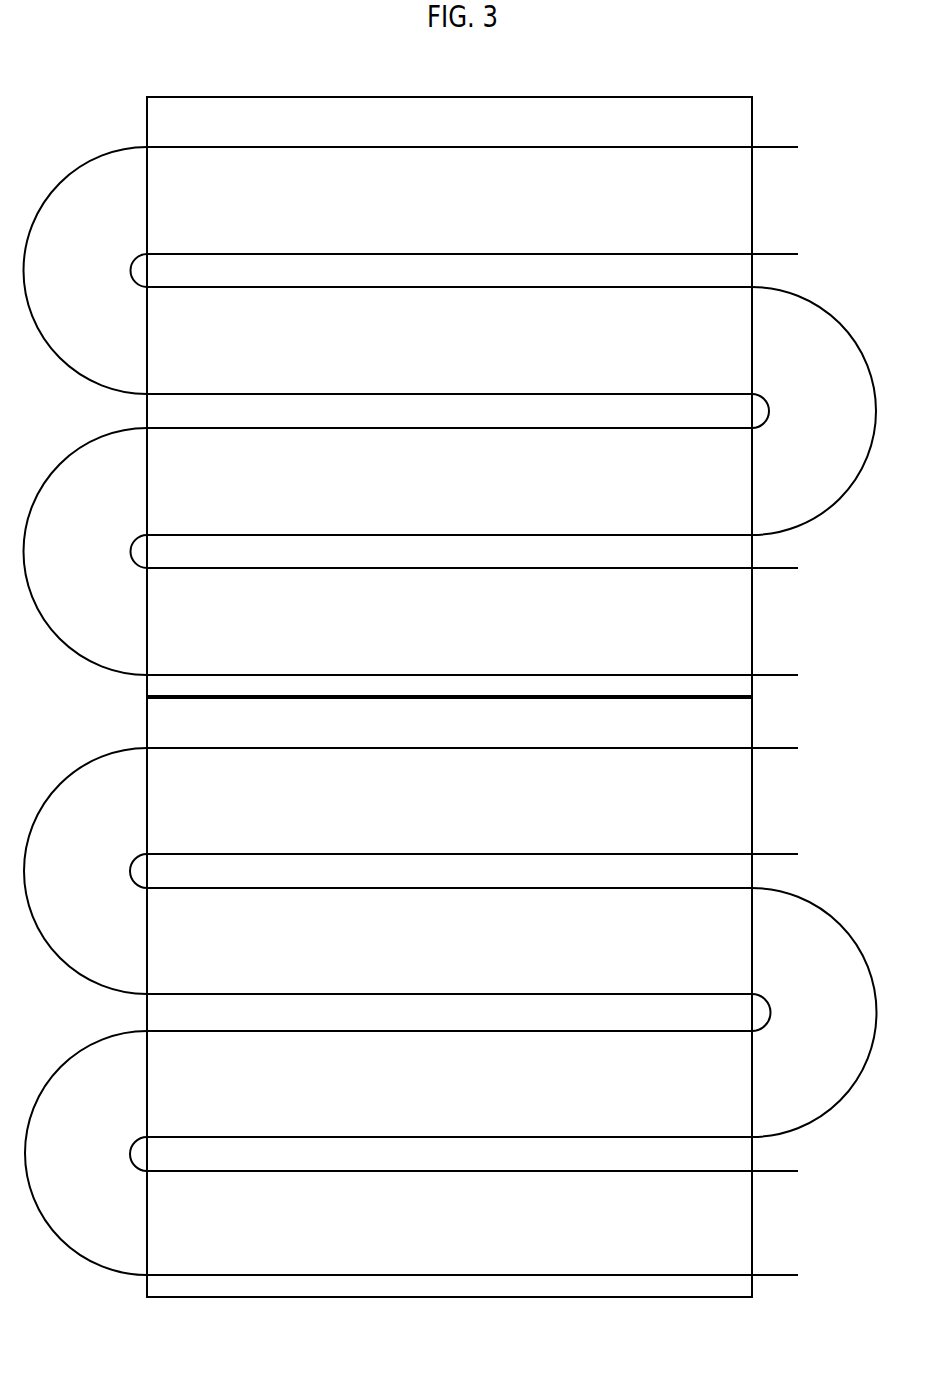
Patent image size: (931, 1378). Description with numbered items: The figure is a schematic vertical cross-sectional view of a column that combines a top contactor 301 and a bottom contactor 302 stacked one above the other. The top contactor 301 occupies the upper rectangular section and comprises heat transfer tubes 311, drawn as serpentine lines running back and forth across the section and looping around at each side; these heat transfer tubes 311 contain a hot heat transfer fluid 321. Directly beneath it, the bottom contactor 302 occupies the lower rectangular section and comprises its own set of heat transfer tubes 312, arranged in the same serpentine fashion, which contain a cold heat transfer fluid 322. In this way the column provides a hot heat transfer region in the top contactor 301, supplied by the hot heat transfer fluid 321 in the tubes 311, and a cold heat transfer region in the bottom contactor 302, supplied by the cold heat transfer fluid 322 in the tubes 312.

The top contactor 301 is at (138, 115).
The bottom contactor 302 is at (142, 735).
The heat transfer tubes 311 is at (657, 146).
The heat transfer tubes 312 is at (657, 746).
The hot heat transfer fluid 321 is at (450, 411).
The cold heat transfer fluid 322 is at (450, 1011).